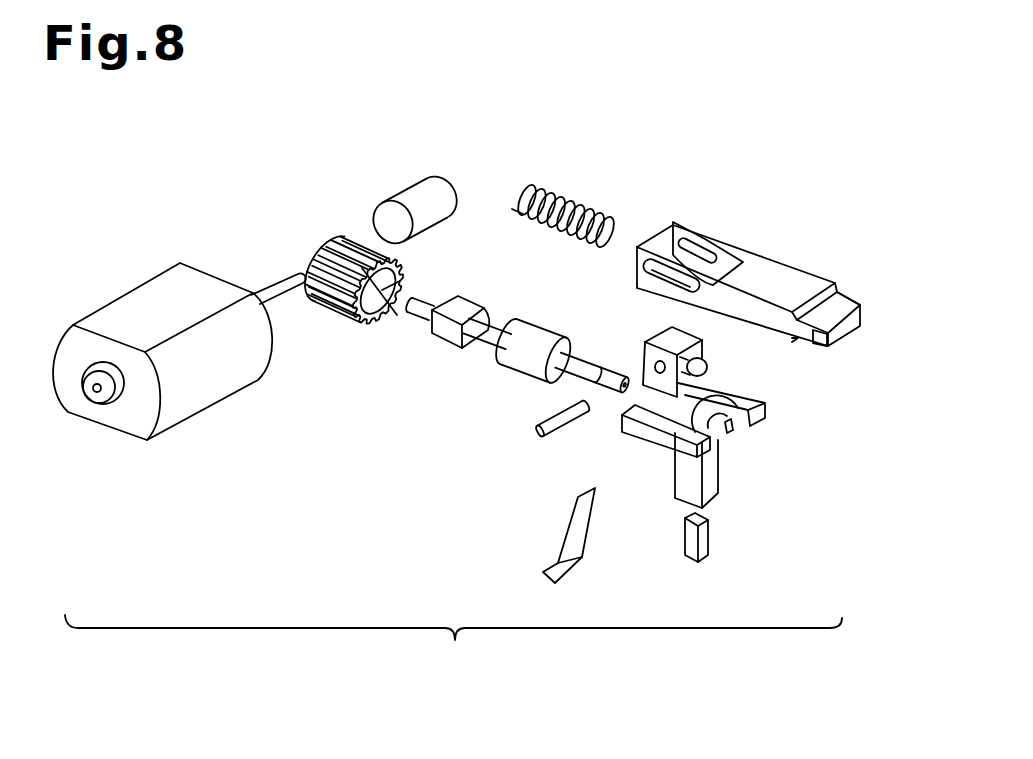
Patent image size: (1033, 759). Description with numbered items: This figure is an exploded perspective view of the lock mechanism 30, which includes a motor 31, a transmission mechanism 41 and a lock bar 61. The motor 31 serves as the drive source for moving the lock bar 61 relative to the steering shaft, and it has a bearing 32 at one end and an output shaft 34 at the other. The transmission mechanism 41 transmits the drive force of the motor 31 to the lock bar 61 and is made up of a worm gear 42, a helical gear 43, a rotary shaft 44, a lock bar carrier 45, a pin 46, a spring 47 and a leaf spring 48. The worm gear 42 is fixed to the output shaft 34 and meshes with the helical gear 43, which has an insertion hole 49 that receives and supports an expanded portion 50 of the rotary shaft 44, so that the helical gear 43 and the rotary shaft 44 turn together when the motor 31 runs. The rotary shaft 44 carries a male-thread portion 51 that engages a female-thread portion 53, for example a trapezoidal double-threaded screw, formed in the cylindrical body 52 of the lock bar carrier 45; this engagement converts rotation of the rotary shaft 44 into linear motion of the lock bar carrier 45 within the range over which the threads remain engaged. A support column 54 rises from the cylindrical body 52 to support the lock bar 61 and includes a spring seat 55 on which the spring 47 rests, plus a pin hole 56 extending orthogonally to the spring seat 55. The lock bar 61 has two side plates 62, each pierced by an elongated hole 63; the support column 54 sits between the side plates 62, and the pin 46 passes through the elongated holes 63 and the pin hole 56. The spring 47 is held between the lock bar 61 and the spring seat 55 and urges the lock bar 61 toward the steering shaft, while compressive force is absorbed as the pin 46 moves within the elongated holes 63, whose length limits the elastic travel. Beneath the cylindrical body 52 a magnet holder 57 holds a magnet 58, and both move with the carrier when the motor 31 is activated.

The lock mechanism 30 is at (453, 647).
The motor 31 is at (208, 410).
The bearing 32 is at (107, 407).
The output shaft 34 is at (273, 275).
The transmission mechanism 41 is at (378, 160).
The worm gear 42 is at (450, 190).
The helical gear 43 is at (381, 311).
The rotary shaft 44 is at (487, 348).
The lock bar carrier 45 is at (627, 435).
The pin 46 is at (534, 432).
The spring 47 is at (578, 205).
The leaf spring 48 is at (585, 560).
The insertion hole 49 is at (388, 286).
The expanded portion 50 is at (443, 337).
The male-thread portion 51 is at (535, 337).
The cylindrical body 52 is at (766, 405).
The female-thread portion 53 is at (732, 433).
The support column 54 is at (676, 362).
The spring seat 55 is at (712, 370).
The pin hole 56 is at (643, 352).
The magnet holder 57 is at (715, 487).
The magnet 58 is at (693, 563).
The lock bar 61 is at (748, 255).
The side plates 62 is at (690, 224).
The elongated hole 63 is at (730, 270).